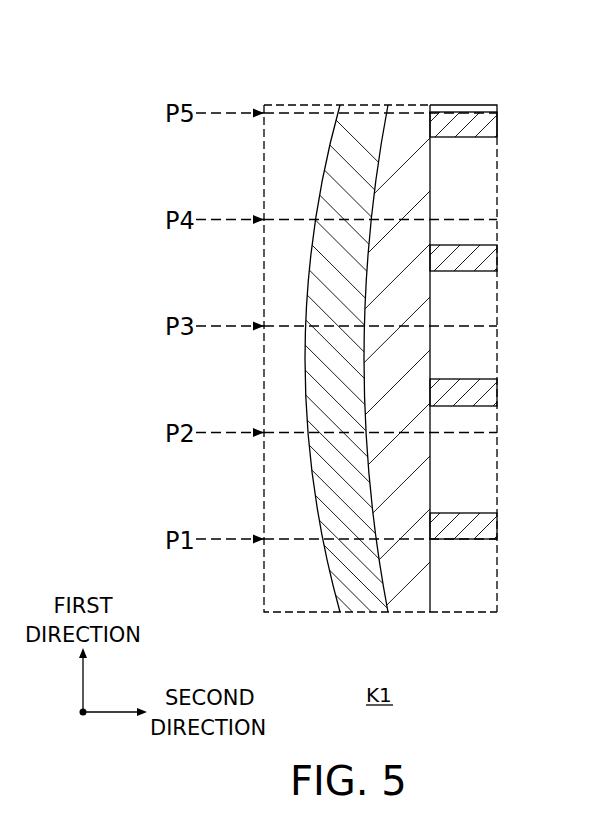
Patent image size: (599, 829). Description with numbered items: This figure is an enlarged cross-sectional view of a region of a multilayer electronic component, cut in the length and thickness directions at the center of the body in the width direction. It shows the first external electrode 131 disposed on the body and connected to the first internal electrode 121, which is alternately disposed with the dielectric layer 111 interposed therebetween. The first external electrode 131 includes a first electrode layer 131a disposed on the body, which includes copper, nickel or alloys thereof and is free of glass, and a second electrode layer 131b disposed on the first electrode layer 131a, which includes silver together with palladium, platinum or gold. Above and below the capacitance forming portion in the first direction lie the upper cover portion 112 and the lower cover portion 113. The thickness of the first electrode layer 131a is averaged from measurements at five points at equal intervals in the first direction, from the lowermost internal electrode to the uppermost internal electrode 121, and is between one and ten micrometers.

The first external electrode 131 is at (376, 307).
The first electrode layer 131a is at (410, 128).
The second electrode layer 131b is at (363, 128).
The dielectric layer 111 is at (488, 158).
The upper cover portion 112 is at (498, 105).
The lower cover portion 113 is at (488, 577).
The first internal electrode 121 is at (490, 123).